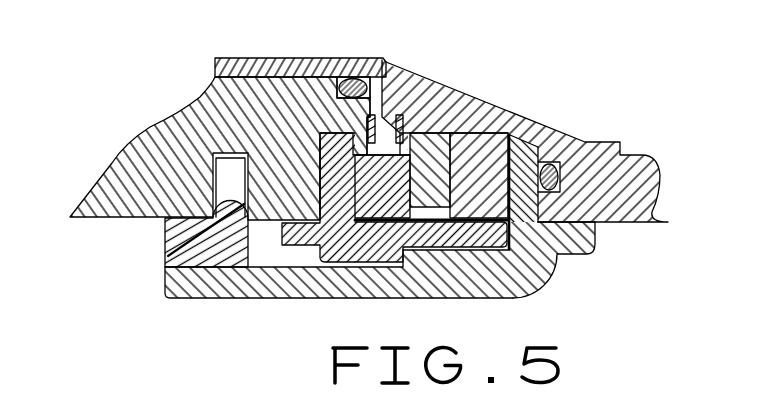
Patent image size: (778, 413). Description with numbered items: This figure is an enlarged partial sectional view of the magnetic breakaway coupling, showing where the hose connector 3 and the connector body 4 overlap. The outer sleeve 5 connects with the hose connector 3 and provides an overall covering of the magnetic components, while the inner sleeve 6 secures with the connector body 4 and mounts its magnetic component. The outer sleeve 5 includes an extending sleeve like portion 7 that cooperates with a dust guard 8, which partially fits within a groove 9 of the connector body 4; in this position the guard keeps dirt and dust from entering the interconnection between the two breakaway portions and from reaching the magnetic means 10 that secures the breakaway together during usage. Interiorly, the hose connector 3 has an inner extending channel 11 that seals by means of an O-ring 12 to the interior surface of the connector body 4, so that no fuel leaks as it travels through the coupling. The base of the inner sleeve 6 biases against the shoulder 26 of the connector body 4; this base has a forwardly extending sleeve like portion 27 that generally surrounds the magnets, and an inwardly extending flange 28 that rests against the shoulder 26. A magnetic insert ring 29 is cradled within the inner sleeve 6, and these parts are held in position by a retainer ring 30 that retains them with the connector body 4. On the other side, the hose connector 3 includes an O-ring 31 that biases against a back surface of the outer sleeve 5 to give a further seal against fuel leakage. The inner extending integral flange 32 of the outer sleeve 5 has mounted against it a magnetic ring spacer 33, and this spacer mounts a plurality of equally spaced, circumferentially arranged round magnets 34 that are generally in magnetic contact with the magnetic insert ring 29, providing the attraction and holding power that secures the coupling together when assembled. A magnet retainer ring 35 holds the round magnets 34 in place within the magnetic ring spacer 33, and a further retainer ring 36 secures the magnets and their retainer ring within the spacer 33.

The hose connector 3 is at (633, 200).
The connector body 4 is at (107, 207).
The outer sleeve 5 is at (522, 273).
The inner sleeve 6 is at (338, 193).
The extending sleeve like portion 7 is at (223, 288).
The dust guard 8 is at (167, 253).
The groove 9 is at (214, 173).
The magnetic means 10 is at (510, 133).
The inner extending channel 11 is at (300, 58).
The O-ring 12 is at (352, 76).
The shoulder 26 is at (318, 181).
The forwardly extending sleeve like portion 27 is at (465, 247).
The inwardly extending flange 28 is at (372, 200).
The magnetic insert ring 29 is at (405, 226).
The retainer ring 30 is at (384, 116).
The O-ring 31 is at (576, 140).
The inner extending integral flange 32 is at (547, 158).
The magnetic ring spacer 33 is at (525, 167).
The round magnets 34 is at (461, 124).
The magnet retainer ring 35 is at (402, 120).
The retainer ring 36 is at (376, 116).